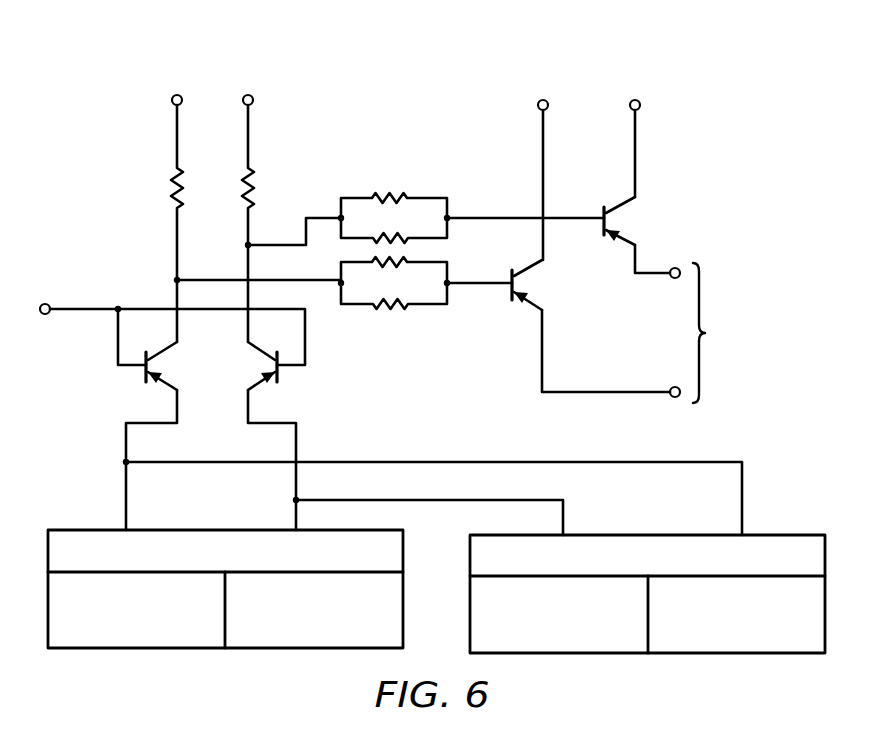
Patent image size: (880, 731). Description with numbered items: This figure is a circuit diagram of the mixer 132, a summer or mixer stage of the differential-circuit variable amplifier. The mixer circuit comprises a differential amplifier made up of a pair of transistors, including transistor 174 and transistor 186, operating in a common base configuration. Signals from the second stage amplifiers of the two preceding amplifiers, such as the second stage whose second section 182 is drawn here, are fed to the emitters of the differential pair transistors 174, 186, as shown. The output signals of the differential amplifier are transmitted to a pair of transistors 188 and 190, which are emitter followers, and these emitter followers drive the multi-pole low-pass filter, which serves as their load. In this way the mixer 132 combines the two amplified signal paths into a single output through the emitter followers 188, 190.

The mixer 132 is at (425, 80).
The transistor 174 is at (157, 378).
The transistor 186 is at (285, 385).
The transistor 188 is at (530, 283).
The transistor 190 is at (628, 217).
The second section 182 is at (102, 647).